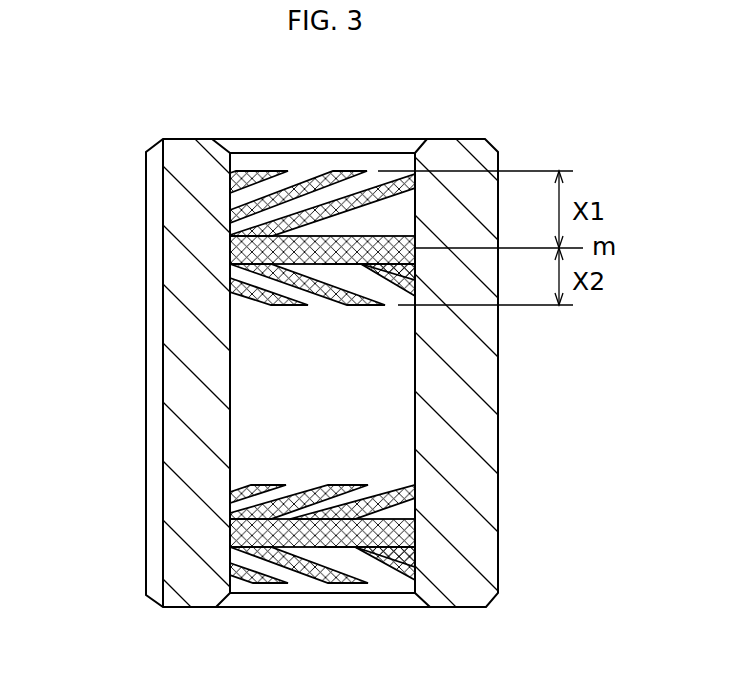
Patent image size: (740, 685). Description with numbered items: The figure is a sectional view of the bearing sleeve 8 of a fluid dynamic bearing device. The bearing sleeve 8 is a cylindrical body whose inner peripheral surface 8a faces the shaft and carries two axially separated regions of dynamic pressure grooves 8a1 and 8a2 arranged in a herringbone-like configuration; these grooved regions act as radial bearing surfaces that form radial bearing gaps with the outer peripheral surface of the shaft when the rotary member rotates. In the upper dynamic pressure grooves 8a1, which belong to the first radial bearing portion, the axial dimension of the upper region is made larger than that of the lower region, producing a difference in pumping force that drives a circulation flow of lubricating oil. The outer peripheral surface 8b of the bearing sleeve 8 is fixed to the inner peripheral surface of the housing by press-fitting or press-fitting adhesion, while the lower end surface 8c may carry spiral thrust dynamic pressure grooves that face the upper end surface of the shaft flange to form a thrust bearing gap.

The bearing sleeve 8 is at (126, 142).
The inner peripheral surface 8a is at (414, 393).
The dynamic pressure grooves 8a1 is at (280, 185).
The dynamic pressure grooves 8a2 is at (282, 493).
The outer peripheral surface 8b is at (148, 345).
The lower end surface 8c is at (192, 607).